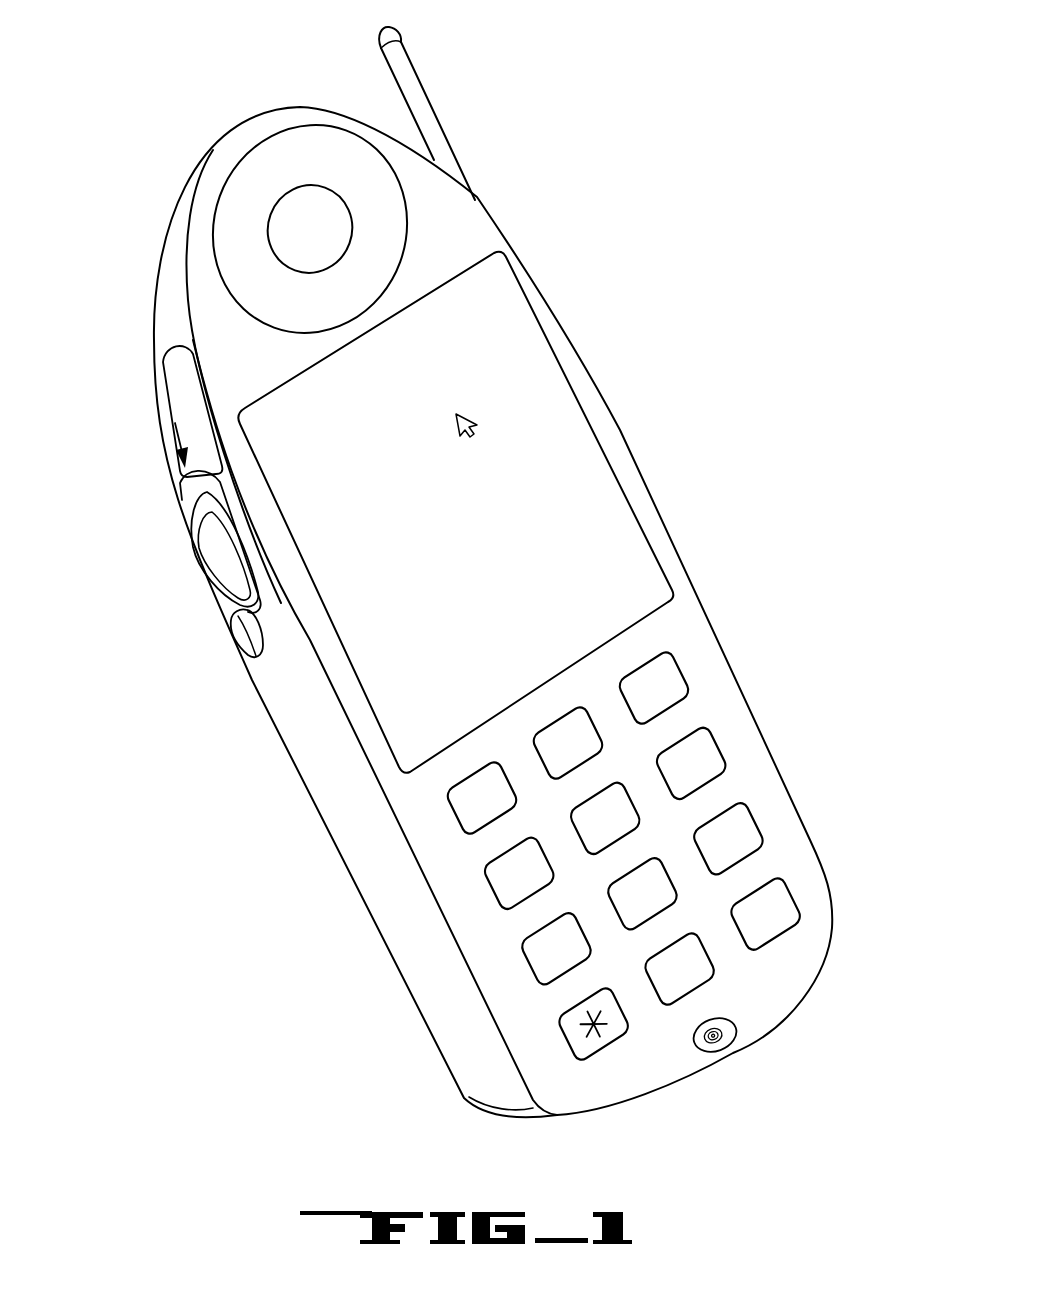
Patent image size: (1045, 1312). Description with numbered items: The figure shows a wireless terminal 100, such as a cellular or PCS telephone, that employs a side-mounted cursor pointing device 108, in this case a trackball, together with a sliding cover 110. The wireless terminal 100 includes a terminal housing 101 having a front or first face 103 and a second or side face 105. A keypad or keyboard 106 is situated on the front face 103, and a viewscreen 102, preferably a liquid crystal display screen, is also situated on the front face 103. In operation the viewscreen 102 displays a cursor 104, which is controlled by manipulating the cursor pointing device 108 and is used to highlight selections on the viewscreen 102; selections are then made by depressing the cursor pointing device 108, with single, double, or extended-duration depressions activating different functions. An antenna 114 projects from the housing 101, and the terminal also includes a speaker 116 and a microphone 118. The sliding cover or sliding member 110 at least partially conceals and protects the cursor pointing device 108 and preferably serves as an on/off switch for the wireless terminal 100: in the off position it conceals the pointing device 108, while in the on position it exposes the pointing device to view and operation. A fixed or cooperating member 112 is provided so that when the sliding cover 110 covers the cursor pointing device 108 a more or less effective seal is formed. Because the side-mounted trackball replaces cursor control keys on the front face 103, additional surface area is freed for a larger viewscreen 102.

The wireless terminal 100 is at (703, 40).
The terminal housing 101 is at (617, 417).
The viewscreen 102 is at (653, 547).
The front face 103 is at (475, 232).
The cursor 104 is at (492, 393).
The side face 105 is at (375, 878).
The keypad 106 is at (713, 688).
The cursor pointing device 108 is at (174, 550).
The sliding cover 110 is at (150, 442).
The cooperating member 112 is at (228, 662).
The antenna 114 is at (418, 105).
The speaker 116 is at (267, 152).
The microphone 118 is at (733, 1053).